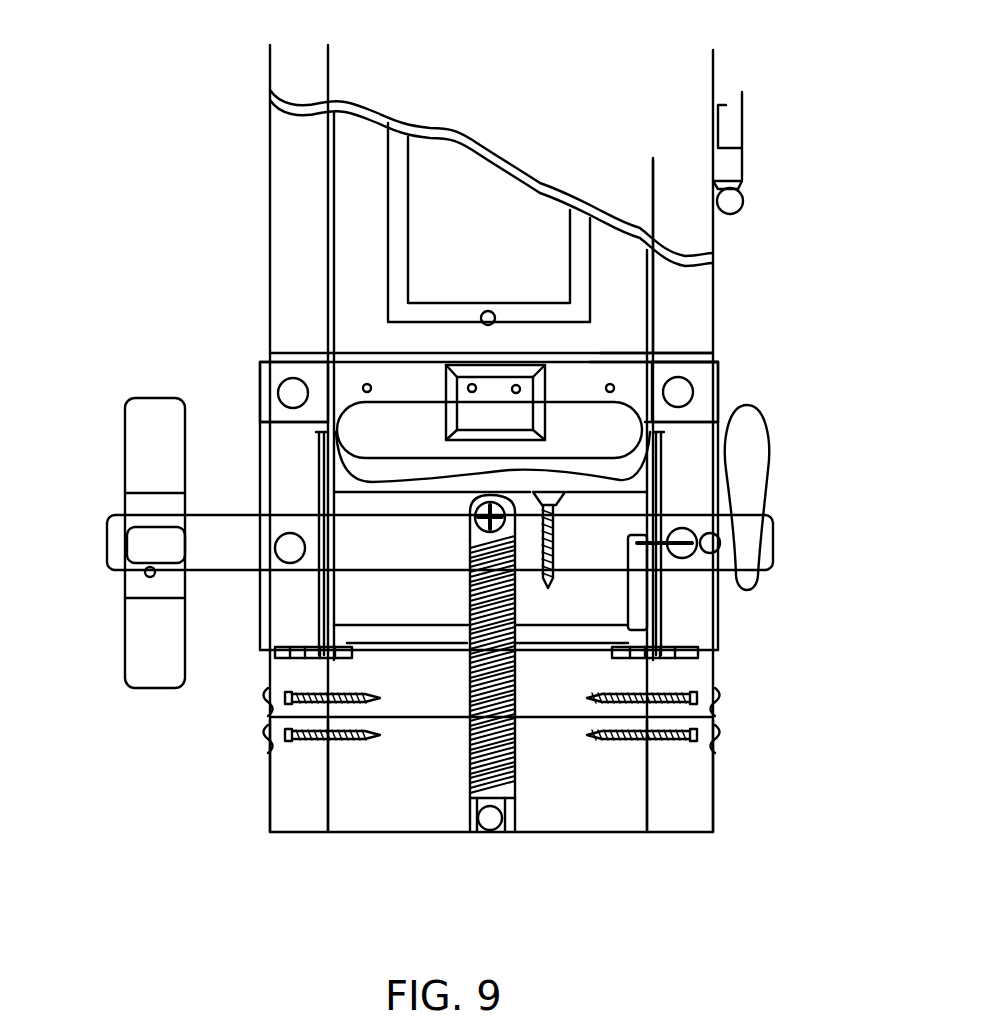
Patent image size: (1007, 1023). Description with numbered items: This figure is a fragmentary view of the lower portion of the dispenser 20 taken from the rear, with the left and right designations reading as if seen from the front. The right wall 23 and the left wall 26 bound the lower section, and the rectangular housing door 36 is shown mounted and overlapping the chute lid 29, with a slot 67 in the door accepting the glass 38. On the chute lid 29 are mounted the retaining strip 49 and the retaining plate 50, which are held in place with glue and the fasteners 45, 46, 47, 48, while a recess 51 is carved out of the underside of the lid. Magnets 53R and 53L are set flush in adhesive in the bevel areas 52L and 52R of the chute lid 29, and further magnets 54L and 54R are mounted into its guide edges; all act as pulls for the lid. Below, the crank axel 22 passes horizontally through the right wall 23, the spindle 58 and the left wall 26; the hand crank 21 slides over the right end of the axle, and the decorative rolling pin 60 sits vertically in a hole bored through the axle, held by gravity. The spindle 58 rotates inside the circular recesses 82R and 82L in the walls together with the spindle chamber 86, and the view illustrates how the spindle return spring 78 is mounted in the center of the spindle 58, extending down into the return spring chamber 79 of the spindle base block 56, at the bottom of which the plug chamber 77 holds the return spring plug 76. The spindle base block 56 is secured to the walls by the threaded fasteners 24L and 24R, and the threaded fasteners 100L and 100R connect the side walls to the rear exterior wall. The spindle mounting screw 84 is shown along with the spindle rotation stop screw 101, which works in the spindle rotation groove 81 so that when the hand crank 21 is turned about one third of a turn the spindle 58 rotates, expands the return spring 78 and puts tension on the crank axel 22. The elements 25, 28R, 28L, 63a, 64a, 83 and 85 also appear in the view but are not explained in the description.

The dispenser 20 is at (693, 832).
The hand crank 21 is at (125, 620).
The crank axel 22 is at (770, 542).
The right wall 23 is at (278, 812).
The threaded fastener 24R is at (260, 757).
The threaded fastener 24L is at (722, 740).
The frame edge 25 is at (720, 676).
The left wall 26 is at (697, 818).
The right clip 28R is at (287, 663).
The left clip 28L is at (632, 665).
The chute lid 29 is at (258, 432).
The housing door 36 is at (618, 297).
The glass 38 is at (497, 200).
The fastener 45 is at (662, 358).
The fastener 46 is at (516, 389).
The fastener 47 is at (470, 392).
The fastener 48 is at (367, 388).
The retaining strip 49 is at (598, 362).
The retaining plate 50 is at (472, 388).
The recess 51 is at (340, 460).
The bevel edge 52R is at (273, 370).
The bevel edge 52L is at (713, 357).
The magnet 53R is at (280, 395).
The magnet 53L is at (693, 392).
The magnet 54R is at (287, 560).
The magnet 54L is at (700, 562).
The spindle base block 56 is at (355, 818).
The spindle 58 is at (450, 610).
The rolling pin 60 is at (763, 585).
The fastener 63a is at (490, 310).
The latch 64a is at (743, 173).
The slot 67 is at (405, 190).
The return spring plug 76 is at (488, 818).
The plug chamber 77 is at (507, 830).
The spindle return spring 78 is at (517, 752).
The return spring chamber 79 is at (515, 790).
The spindle rotation groove 81 is at (645, 603).
The circular recess 82R is at (322, 427).
The circular recess 82L is at (667, 420).
The pivot pin 83 is at (145, 578).
The spindle mounting screw 84 is at (548, 572).
The screw head 85 is at (467, 530).
The spindle chamber 86 is at (368, 485).
The threaded fastener 100R is at (257, 715).
The threaded fastener 100L is at (722, 700).
The spindle rotation stop screw 101 is at (667, 548).